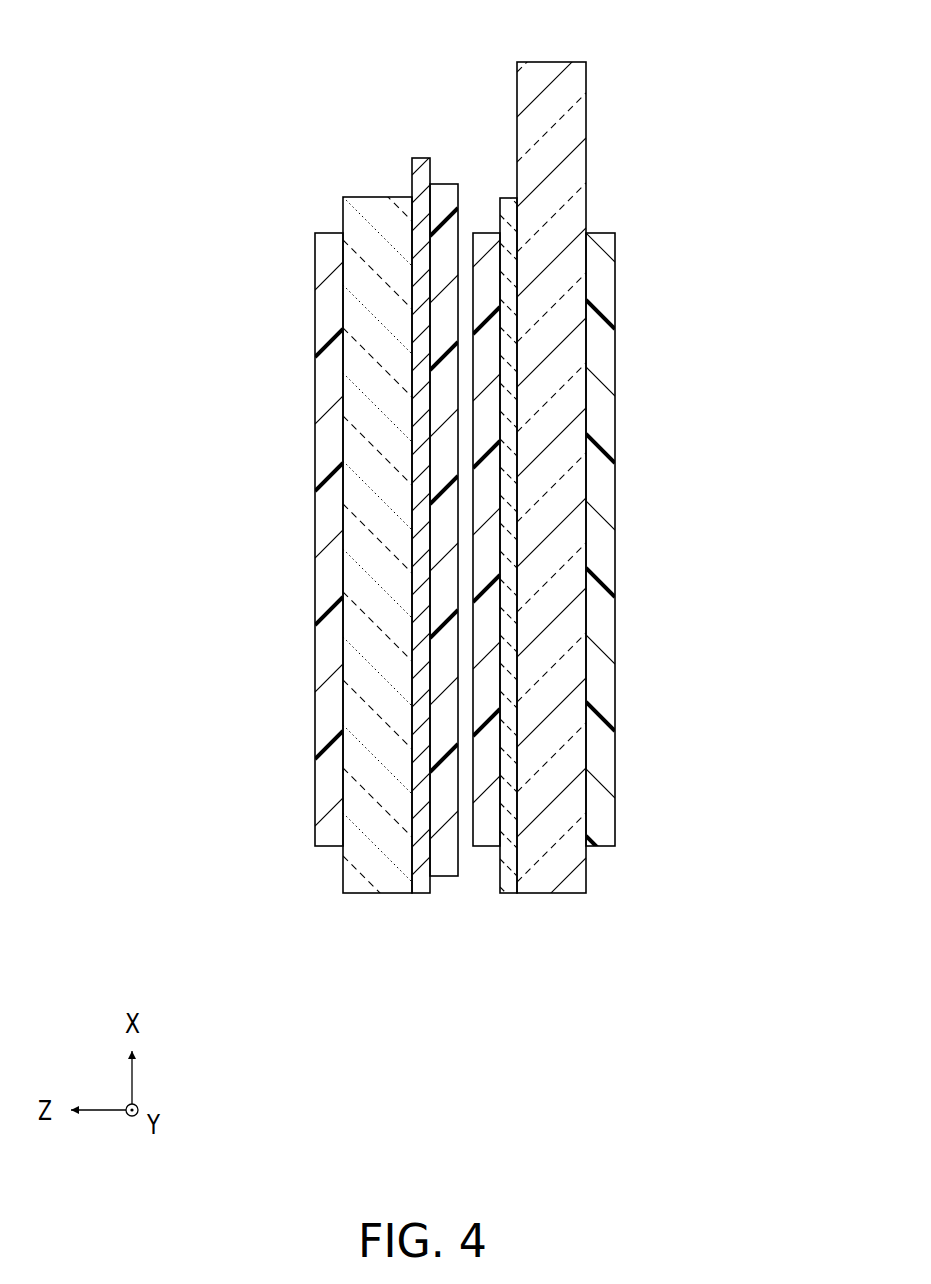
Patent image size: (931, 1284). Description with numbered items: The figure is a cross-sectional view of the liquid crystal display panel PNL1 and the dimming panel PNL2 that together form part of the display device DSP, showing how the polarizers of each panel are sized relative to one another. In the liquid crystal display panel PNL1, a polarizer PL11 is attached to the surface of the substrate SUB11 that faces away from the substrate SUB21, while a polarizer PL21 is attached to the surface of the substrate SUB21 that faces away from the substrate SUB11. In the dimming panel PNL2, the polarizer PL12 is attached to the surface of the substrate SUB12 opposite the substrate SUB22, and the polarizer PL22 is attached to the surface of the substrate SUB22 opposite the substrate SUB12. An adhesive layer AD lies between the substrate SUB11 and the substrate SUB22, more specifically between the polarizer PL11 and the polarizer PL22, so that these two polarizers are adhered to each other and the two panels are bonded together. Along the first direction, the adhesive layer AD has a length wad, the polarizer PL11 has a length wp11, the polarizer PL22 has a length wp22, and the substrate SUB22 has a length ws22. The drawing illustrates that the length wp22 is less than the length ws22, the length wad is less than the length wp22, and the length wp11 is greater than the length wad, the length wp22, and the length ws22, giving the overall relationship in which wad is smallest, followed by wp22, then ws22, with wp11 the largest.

The display device DSP is at (138, 75).
The liquid crystal display panel PNL1 is at (428, 998).
The dimming panel PNL2 is at (690, 998).
The substrate SUB11 is at (418, 873).
The substrate SUB21 is at (377, 868).
The substrate SUB12 is at (555, 868).
The substrate SUB22 is at (507, 870).
The polarizer PL11 is at (443, 205).
The polarizer PL21 is at (333, 258).
The polarizer PL12 is at (597, 260).
The polarizer PL22 is at (483, 253).
The adhesive layer AD is at (463, 790).
The length of polarizer PL11 wp11 is at (458, 877).
The length of polarizer PL22 wp22 is at (195, 247).
The length of adhesive layer wad is at (473, 799).
The length of substrate SUB22 ws22 is at (586, 199).